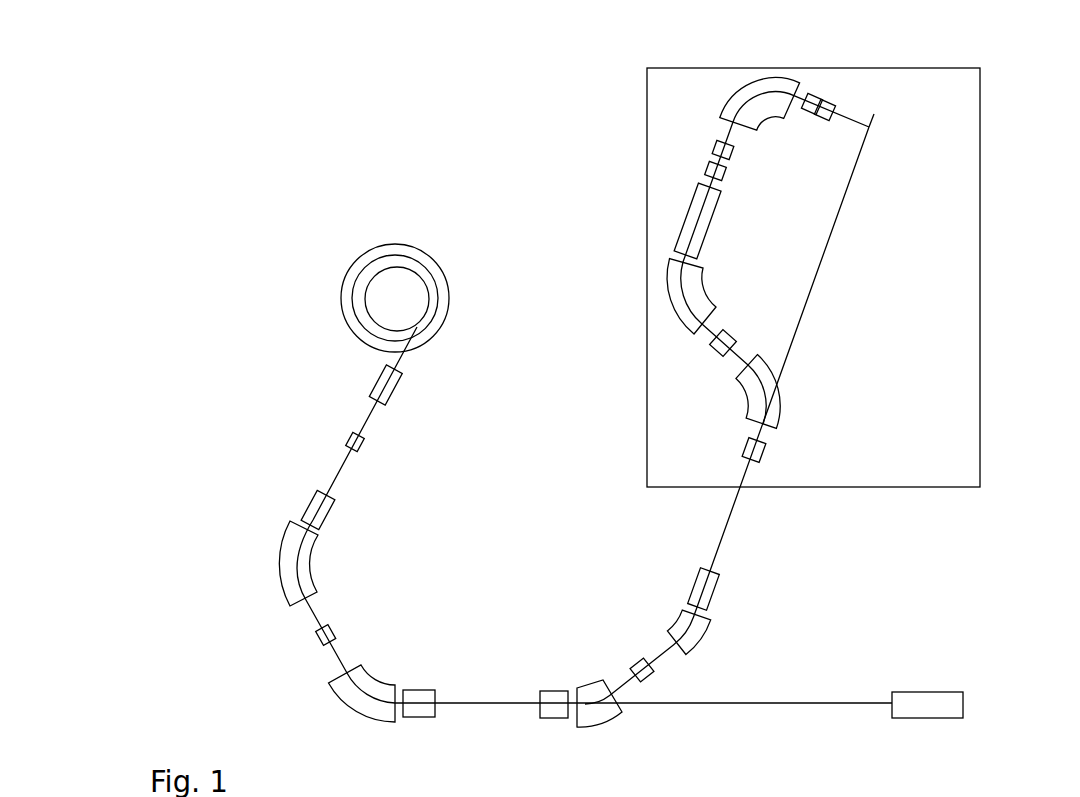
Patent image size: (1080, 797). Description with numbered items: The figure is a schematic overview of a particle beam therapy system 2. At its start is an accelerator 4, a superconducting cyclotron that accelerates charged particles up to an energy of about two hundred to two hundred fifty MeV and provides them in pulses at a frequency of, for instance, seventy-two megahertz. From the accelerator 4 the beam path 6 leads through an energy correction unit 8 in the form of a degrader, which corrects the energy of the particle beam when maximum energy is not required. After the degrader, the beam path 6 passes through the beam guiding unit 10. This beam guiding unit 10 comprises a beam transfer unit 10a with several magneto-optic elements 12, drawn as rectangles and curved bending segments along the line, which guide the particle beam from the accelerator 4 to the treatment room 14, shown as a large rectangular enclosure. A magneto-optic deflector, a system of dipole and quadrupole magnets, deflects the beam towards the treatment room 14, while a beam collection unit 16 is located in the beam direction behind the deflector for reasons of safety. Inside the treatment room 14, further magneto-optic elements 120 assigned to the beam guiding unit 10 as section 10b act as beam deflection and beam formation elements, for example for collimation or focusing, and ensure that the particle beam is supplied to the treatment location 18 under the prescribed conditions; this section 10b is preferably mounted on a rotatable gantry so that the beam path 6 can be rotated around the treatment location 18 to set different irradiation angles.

The particle beam therapy system 2 is at (247, 125).
The accelerator 4 is at (427, 248).
The beam path 6 is at (333, 472).
The energy correction unit 8 is at (363, 441).
The beam guiding unit 10 is at (490, 603).
The beam transfer unit 10a is at (257, 621).
The section of beam guiding unit 10b is at (672, 140).
The magneto-optic elements 12 is at (378, 680).
The treatment room 14 is at (980, 103).
The beam collection unit 16 is at (963, 700).
The treatment location 18 is at (869, 130).
The magneto-optic elements 120 is at (710, 358).